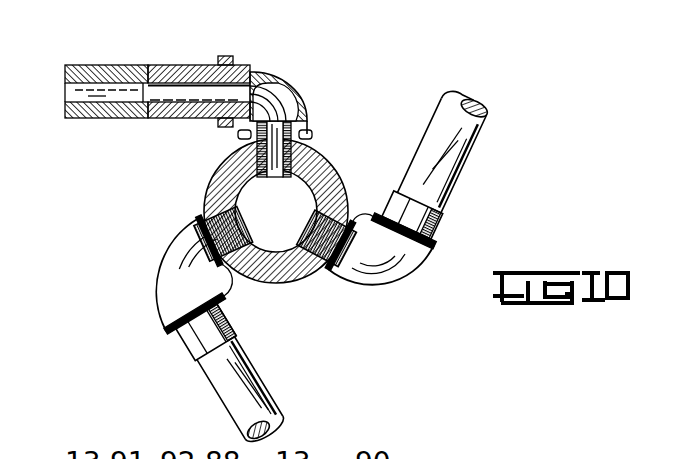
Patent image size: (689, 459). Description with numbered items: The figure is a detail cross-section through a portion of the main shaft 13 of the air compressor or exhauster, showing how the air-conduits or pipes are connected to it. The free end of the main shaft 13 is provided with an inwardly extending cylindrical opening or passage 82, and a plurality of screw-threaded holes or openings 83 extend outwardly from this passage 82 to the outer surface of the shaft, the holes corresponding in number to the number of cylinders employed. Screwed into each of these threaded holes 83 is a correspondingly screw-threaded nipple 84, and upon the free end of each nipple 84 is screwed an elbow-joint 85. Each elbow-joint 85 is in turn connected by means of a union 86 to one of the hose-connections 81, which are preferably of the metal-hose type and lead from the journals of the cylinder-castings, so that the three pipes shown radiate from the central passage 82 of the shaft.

The main shaft 13 is at (265, 204).
The hose-connection 81 is at (92, 120).
The cylindrical opening or passage 82 is at (250, 188).
The screw-threaded holes or openings 83 is at (274, 191).
The screw-threaded nipples 84 is at (283, 110).
The elbow-joints 85 is at (273, 76).
The union 86 is at (203, 68).